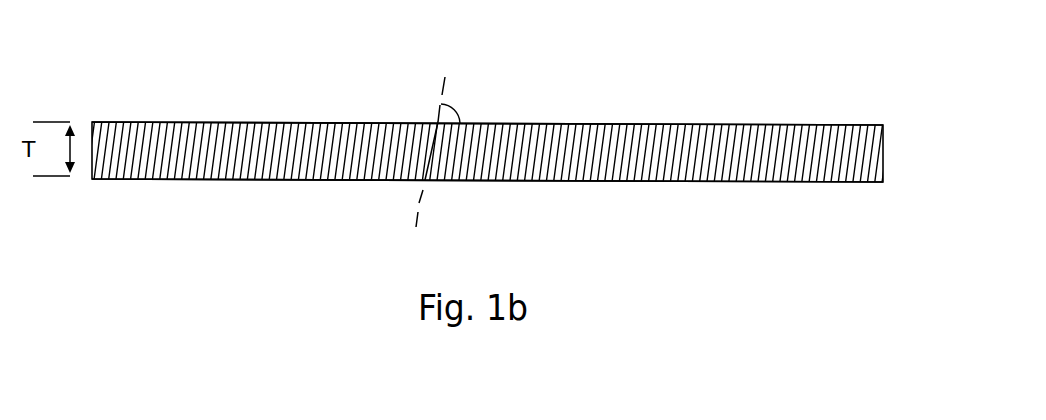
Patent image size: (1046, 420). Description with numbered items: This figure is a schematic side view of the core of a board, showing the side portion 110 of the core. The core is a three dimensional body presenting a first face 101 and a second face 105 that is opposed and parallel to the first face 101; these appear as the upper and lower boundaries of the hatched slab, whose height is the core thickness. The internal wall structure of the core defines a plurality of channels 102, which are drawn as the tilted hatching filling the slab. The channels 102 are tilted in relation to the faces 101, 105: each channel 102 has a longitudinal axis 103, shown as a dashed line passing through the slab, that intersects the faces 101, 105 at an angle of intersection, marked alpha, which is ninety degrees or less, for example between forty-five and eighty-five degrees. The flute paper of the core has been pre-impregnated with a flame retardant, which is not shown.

The first face 101 is at (672, 114).
The channels 102 is at (327, 165).
The longitudinal axis 103 is at (462, 78).
The second face 105 is at (670, 196).
The side portion 110 is at (262, 166).